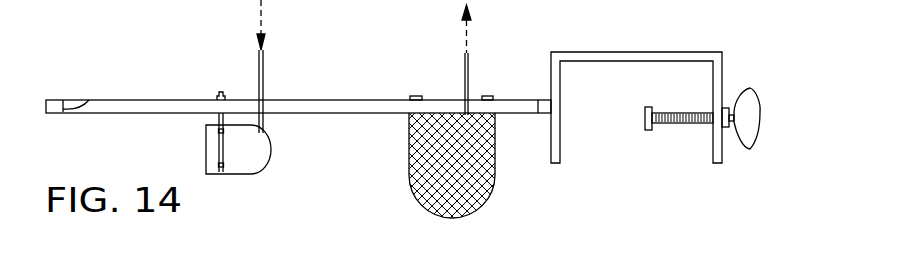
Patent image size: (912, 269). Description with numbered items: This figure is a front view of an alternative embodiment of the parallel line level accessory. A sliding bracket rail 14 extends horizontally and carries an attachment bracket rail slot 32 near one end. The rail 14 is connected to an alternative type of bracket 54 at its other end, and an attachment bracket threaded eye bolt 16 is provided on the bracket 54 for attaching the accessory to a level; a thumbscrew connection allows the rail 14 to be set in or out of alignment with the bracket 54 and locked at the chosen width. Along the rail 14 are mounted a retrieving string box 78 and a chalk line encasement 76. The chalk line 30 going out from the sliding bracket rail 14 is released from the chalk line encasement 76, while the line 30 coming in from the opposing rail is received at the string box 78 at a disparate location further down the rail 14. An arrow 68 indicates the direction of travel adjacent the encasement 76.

The bracket rail 14 is at (160, 113).
The attachment bracket rail slot 32 is at (93, 97).
The chalk line 30 is at (258, 74).
The retrieving string box 78 is at (248, 160).
The basket direction arrow 68 is at (405, 133).
The chalk line encasement 76 is at (487, 197).
The bracket 54 is at (612, 57).
The attachment bracket threaded eye bolt 16 is at (754, 117).